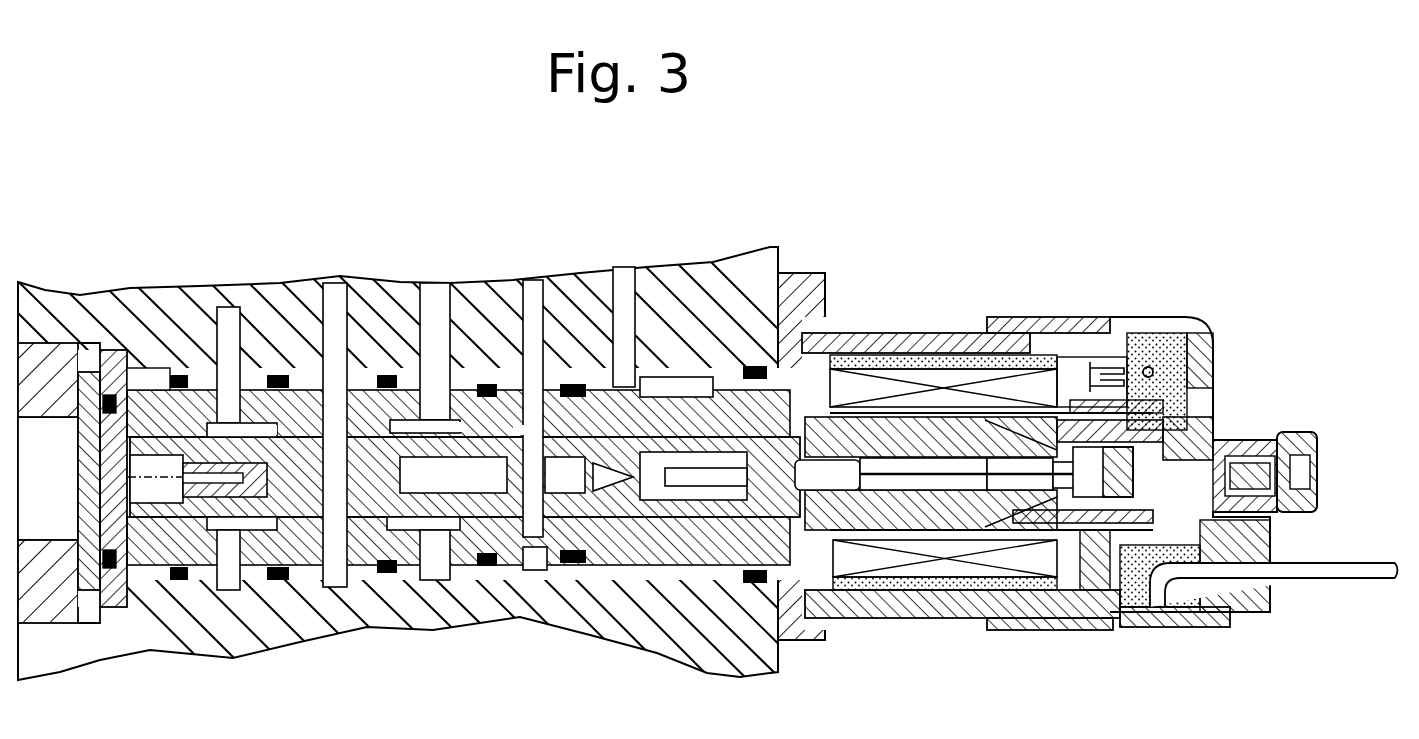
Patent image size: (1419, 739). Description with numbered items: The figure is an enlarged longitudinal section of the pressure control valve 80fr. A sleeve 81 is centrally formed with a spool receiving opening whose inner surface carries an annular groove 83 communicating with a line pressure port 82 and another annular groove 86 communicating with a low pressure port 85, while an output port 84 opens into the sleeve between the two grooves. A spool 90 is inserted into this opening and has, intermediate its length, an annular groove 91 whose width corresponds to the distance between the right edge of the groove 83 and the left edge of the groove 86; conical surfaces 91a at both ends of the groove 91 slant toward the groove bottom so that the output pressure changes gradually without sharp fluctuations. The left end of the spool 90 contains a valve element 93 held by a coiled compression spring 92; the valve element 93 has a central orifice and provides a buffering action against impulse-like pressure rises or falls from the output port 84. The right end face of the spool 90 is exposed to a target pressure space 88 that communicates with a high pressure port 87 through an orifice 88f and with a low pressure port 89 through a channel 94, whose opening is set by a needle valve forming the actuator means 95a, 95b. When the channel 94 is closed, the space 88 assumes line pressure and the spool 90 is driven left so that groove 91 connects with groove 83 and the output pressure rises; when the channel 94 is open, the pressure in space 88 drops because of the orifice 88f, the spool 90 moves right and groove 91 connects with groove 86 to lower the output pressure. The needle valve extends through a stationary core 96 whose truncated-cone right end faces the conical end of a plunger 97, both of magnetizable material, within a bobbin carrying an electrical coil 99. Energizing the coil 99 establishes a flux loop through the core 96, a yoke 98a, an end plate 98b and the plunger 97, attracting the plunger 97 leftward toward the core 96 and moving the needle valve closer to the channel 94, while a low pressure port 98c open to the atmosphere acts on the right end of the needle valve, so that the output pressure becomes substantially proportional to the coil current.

The pressure control valve 80fr is at (828, 272).
The sleeve 81 is at (143, 380).
The line pressure port 82 is at (225, 312).
The annular groove 83 is at (257, 425).
The output port 84 is at (331, 305).
The low pressure port 85 is at (435, 300).
The annular groove 86 is at (460, 423).
The high pressure port 87 is at (530, 300).
The target pressure space 88 is at (523, 430).
The orifice 88f is at (500, 620).
The low pressure port 89 is at (627, 300).
The spool 90 is at (330, 590).
The annular groove 91 is at (367, 583).
The conical surfaces 91a is at (300, 590).
The coiled compression spring 92 is at (152, 590).
The valve element 93 is at (261, 578).
The channel 94 is at (612, 487).
The actuator means 95a is at (692, 487).
The actuator means 95b is at (827, 483).
The stationary core 96 is at (913, 520).
The plunger 97 is at (1112, 580).
The yoke 98a is at (860, 610).
The end plate 98b is at (1098, 590).
The low pressure port 98c is at (1320, 464).
The electrical coil 99 is at (922, 365).